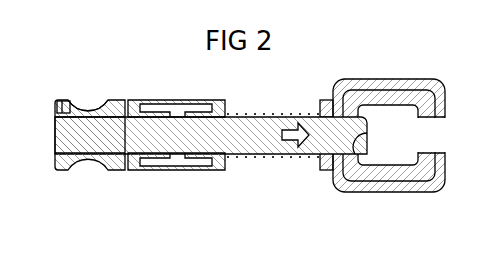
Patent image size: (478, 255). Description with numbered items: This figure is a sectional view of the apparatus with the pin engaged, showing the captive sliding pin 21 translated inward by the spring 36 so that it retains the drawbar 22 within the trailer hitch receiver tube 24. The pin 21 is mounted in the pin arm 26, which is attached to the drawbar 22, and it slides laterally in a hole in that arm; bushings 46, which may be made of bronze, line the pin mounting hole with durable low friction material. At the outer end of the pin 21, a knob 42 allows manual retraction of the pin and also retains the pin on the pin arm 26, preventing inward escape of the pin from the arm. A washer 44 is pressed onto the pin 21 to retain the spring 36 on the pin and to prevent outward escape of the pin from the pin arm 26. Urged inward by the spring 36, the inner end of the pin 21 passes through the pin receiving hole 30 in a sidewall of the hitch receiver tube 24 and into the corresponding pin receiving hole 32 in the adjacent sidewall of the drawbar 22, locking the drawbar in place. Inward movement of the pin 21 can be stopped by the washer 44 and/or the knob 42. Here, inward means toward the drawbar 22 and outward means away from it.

The captive sliding pin 21 is at (98, 140).
The drawbar 22 is at (398, 98).
The trailer hitch receiver tube 24 is at (361, 86).
The pin arm 26 is at (178, 170).
The pin receiving hole 30 is at (336, 112).
The pin receiving hole 32 is at (360, 142).
The spring 36 is at (272, 155).
The knob 42 is at (106, 110).
The washer 44 is at (320, 108).
The bushings 46 is at (133, 104).